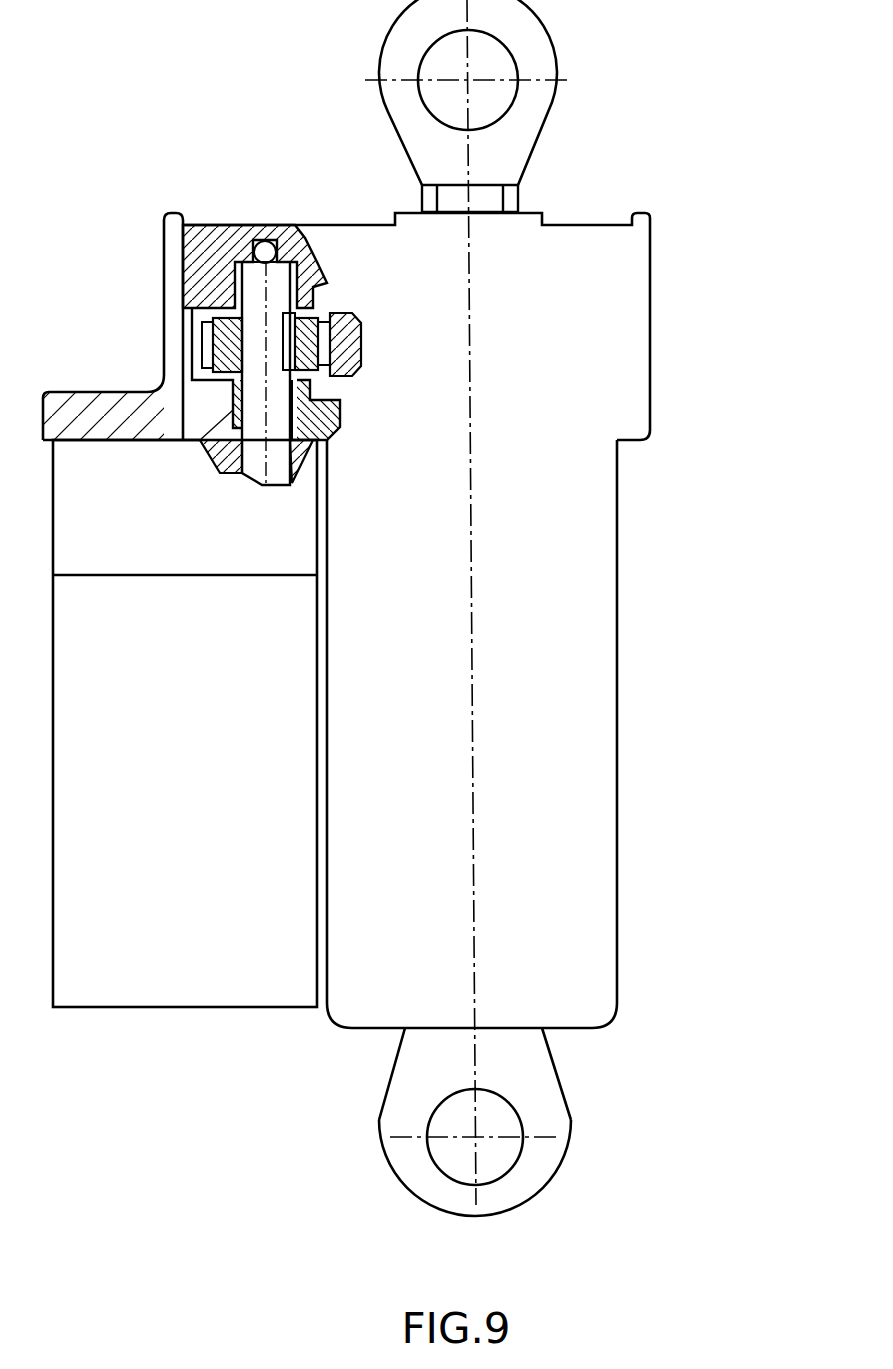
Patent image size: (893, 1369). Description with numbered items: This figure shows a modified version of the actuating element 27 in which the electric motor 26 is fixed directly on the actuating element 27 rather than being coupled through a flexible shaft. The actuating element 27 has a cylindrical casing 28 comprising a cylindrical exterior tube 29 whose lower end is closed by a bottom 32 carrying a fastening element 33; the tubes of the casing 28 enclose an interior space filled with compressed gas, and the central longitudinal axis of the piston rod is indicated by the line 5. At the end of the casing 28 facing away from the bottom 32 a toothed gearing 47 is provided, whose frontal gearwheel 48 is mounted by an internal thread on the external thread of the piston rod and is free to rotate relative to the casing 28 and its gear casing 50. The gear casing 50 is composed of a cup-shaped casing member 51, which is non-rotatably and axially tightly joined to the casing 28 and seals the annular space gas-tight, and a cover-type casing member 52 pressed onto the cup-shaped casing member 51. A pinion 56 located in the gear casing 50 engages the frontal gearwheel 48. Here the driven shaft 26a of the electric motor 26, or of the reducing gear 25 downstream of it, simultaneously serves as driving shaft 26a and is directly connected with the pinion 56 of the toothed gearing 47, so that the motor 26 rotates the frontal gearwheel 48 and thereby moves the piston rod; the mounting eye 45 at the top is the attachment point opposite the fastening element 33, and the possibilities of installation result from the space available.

The piston rod 5 is at (473, 585).
The reducing gear 25 is at (110, 544).
The electric motor 26 is at (166, 801).
The driven shaft 26a is at (272, 480).
The actuating element 27 is at (531, 734).
The cylindrical casing 28 is at (531, 734).
The cylindrical exterior tube 29 is at (618, 797).
The bottom 32 is at (572, 1032).
The fastening element 33 is at (550, 1162).
The upper mounting eye 45 is at (540, 48).
The toothed gearing 47 is at (588, 219).
The frontal gearwheel 48 is at (347, 337).
The gear casing 50 is at (472, 326).
The cup-shaped casing member 51 is at (651, 382).
The cover-type casing member 52 is at (229, 226).
The pinion 56 is at (222, 345).